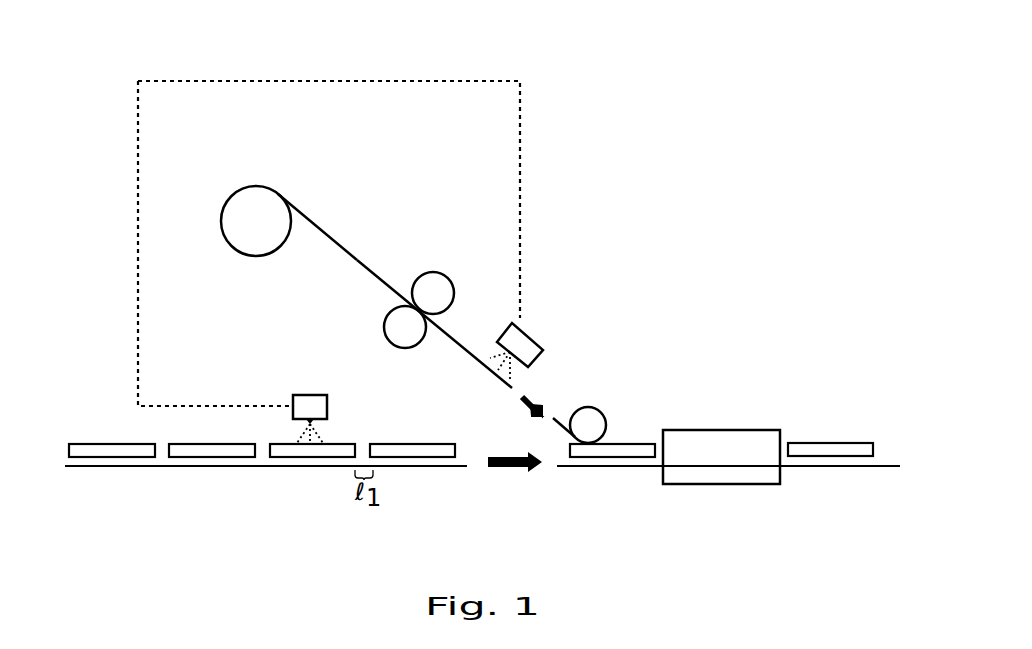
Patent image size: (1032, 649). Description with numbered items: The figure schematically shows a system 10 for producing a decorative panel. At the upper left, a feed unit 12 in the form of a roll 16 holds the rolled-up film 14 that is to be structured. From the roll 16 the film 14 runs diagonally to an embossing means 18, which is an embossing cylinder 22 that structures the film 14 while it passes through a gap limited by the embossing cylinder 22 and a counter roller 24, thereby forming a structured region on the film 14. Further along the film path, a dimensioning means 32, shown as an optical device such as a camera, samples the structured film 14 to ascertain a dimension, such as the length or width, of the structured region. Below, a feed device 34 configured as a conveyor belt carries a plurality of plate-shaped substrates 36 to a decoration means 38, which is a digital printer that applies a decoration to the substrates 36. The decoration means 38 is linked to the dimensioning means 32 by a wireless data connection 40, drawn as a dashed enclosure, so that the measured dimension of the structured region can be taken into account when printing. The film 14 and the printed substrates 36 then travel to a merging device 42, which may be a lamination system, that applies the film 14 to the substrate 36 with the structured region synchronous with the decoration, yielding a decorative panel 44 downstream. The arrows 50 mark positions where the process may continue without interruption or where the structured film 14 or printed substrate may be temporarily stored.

The system 10 is at (556, 148).
The feed unit 12 is at (246, 180).
The film 14 is at (343, 245).
The roll 16 is at (271, 207).
The embossing means 18 is at (410, 362).
The embossing cylinder 22 is at (398, 336).
The counter roller 24 is at (440, 276).
The dimensioning means 32 is at (525, 343).
The feed device 34 is at (83, 467).
The plate-shaped substrates 36 is at (138, 452).
The decoration means 38 is at (308, 397).
The wireless data connection 40 is at (382, 81).
The merging device 42 is at (720, 440).
The decorative panel 44 is at (838, 449).
The arrows 50 is at (530, 393).